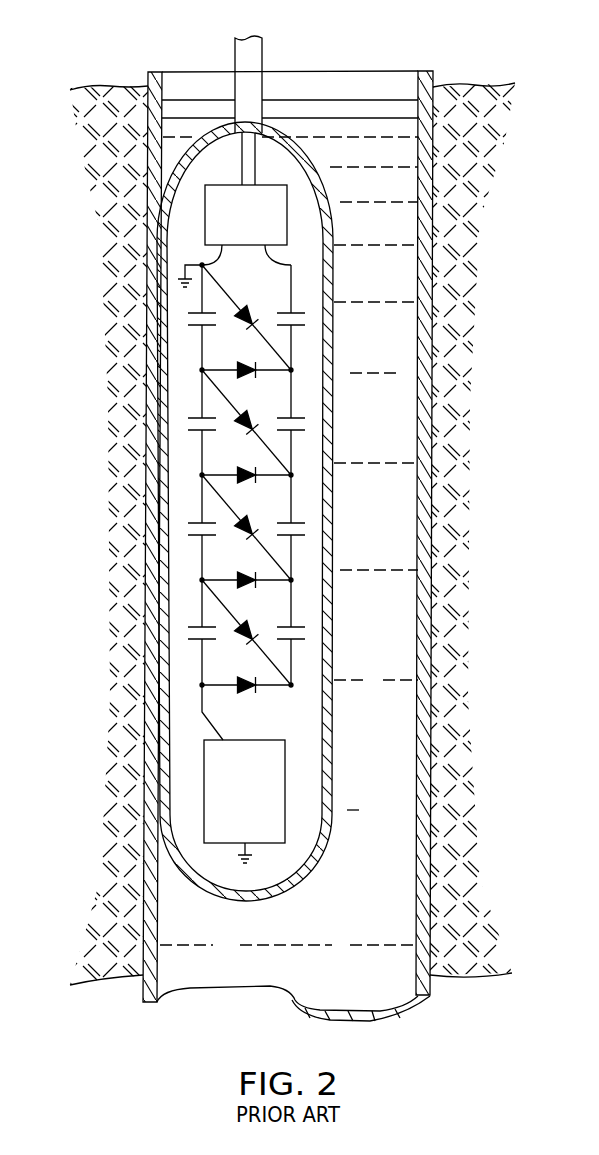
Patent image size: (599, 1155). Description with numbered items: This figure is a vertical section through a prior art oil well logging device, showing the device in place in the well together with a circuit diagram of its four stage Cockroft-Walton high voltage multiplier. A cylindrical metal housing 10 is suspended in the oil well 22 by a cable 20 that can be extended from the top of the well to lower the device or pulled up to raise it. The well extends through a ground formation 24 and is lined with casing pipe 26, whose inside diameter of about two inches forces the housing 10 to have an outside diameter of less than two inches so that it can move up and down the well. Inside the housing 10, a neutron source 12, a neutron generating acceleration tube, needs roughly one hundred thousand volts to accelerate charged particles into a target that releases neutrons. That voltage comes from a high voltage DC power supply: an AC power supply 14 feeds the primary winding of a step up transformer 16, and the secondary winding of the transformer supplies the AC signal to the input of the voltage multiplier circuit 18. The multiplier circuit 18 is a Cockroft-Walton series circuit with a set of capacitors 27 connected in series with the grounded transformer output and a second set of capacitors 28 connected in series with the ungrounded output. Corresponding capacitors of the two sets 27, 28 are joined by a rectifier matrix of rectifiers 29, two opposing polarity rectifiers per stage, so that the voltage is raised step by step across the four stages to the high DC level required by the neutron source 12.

The housing 10 is at (334, 287).
The neutron source 12 is at (276, 770).
The AC power supply 14 is at (242, 157).
The step up transformer 16 is at (218, 224).
The voltage multiplier circuit 18 is at (162, 310).
The cable 20 is at (256, 55).
The oil well 22 is at (383, 347).
The ground formation 24 is at (458, 448).
The casing pipe 26 is at (427, 393).
The set of capacitors 27 is at (186, 652).
The set of capacitors 28 is at (304, 653).
The rectifiers 29 is at (271, 290).